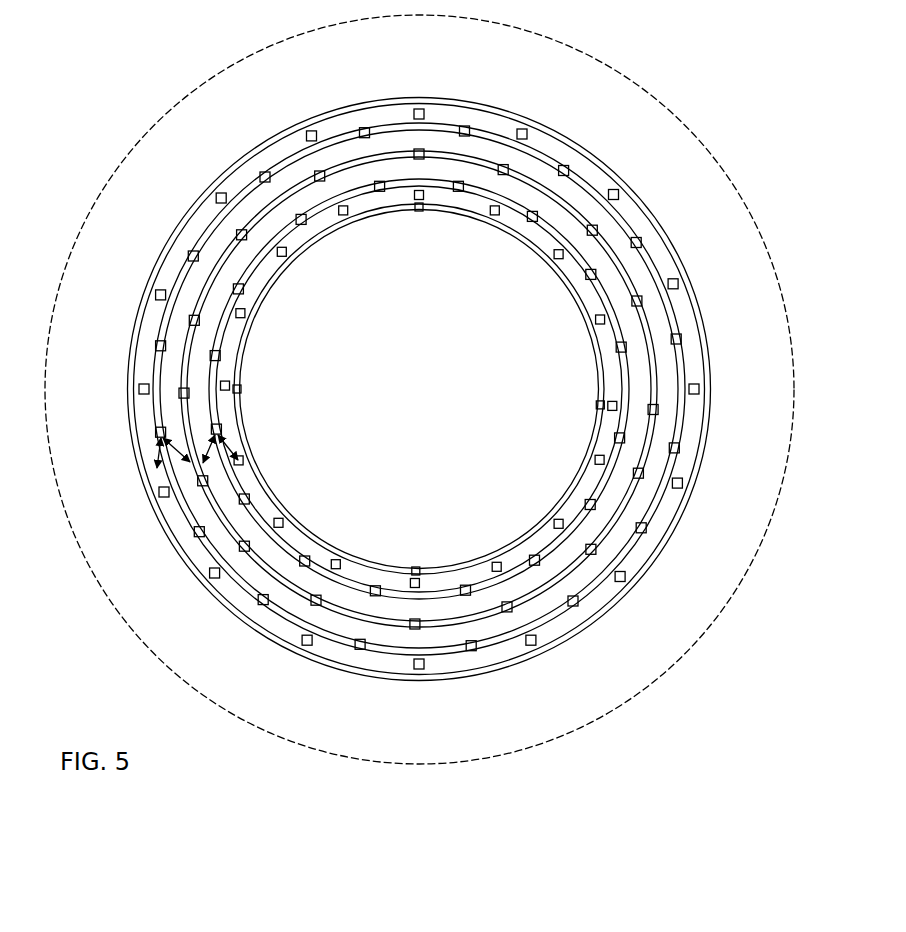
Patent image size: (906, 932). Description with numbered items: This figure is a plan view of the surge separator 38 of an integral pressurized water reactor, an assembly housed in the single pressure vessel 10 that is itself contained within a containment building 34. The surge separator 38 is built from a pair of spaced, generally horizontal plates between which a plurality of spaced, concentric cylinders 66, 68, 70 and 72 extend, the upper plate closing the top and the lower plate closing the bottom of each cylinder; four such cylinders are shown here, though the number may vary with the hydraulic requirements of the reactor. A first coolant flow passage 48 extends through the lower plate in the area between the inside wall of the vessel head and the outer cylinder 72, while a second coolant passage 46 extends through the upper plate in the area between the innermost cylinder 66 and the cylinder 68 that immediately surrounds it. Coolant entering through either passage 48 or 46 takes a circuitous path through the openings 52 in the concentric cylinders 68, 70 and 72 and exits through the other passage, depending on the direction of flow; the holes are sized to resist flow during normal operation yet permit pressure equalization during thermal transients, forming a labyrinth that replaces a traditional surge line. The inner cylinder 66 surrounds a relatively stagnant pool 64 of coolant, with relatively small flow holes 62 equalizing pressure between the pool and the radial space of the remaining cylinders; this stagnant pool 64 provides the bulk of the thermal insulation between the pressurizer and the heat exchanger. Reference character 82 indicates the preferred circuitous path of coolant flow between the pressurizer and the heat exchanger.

The pressure vessel 10 is at (658, 567).
The containment building 34 is at (594, 58).
The surge separator 38 is at (650, 150).
The second coolant passage 46 is at (595, 322).
The first coolant flow passage 48 is at (527, 131).
The openings within the concentric cylinders 52 is at (417, 152).
The flow holes 62 is at (419, 212).
The stagnant pool 64 is at (434, 396).
The inner concentric cylinder 66 is at (593, 378).
The concentric cylinder 68 is at (595, 294).
The concentric cylinder 70 is at (630, 280).
The outer concentric cylinder 72 is at (629, 223).
The circuitous path of coolant flow 82 is at (225, 448).